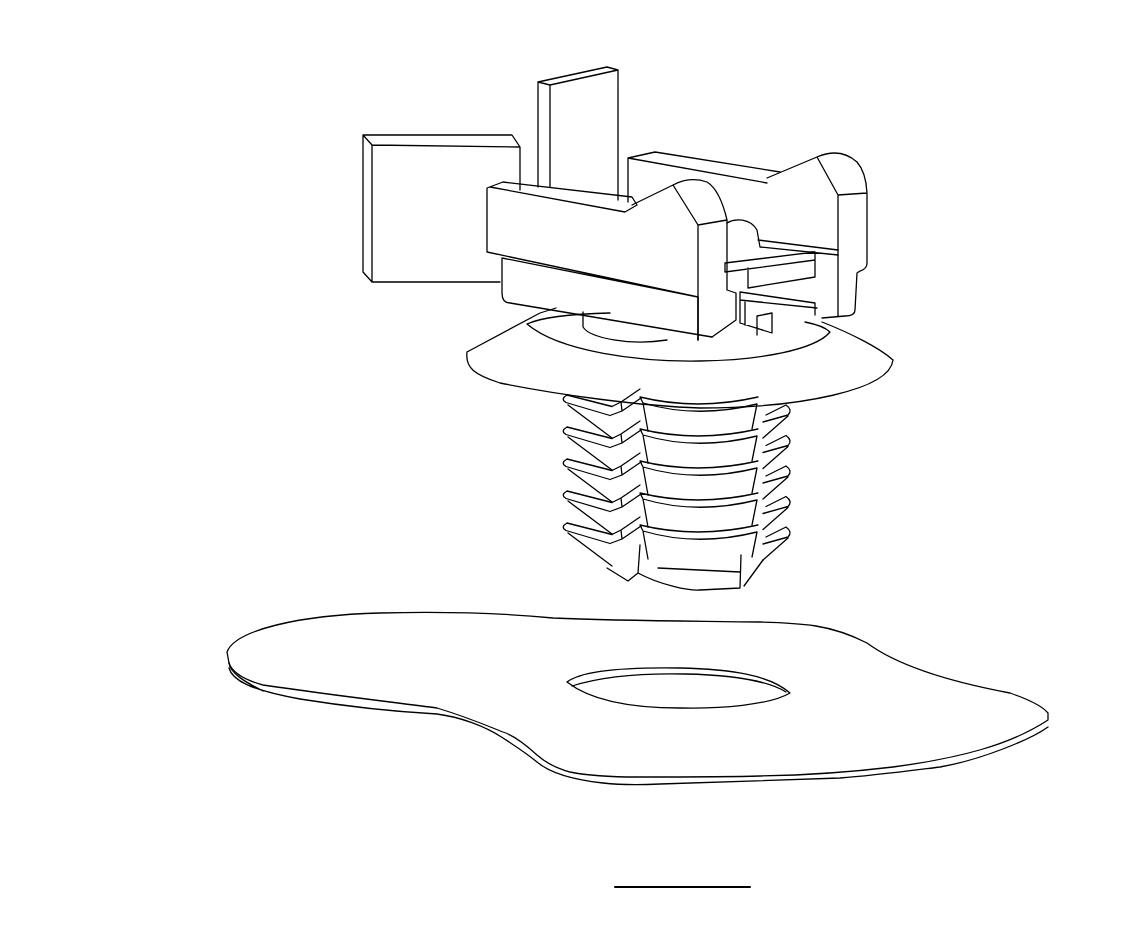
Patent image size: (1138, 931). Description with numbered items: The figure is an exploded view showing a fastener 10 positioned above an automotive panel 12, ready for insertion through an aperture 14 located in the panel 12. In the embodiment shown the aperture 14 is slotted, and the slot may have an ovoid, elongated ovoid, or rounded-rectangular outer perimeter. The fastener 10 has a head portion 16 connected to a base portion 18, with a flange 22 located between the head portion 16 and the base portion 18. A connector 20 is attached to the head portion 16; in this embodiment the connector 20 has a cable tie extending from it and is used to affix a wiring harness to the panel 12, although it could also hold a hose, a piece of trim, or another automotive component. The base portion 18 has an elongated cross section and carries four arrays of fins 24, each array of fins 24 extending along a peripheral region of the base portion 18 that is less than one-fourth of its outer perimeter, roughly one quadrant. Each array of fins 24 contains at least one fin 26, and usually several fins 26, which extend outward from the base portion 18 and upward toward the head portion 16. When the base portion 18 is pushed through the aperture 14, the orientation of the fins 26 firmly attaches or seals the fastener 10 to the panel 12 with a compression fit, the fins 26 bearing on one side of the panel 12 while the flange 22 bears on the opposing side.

The fastener 10 is at (963, 92).
The panel 12 is at (1027, 715).
The aperture 14 is at (684, 707).
The head portion 16 is at (898, 305).
The base portion 18 is at (828, 522).
The connector 20 is at (870, 197).
The flange 22 is at (892, 363).
The array of fins 24 is at (556, 398).
The fin 26 is at (770, 562).